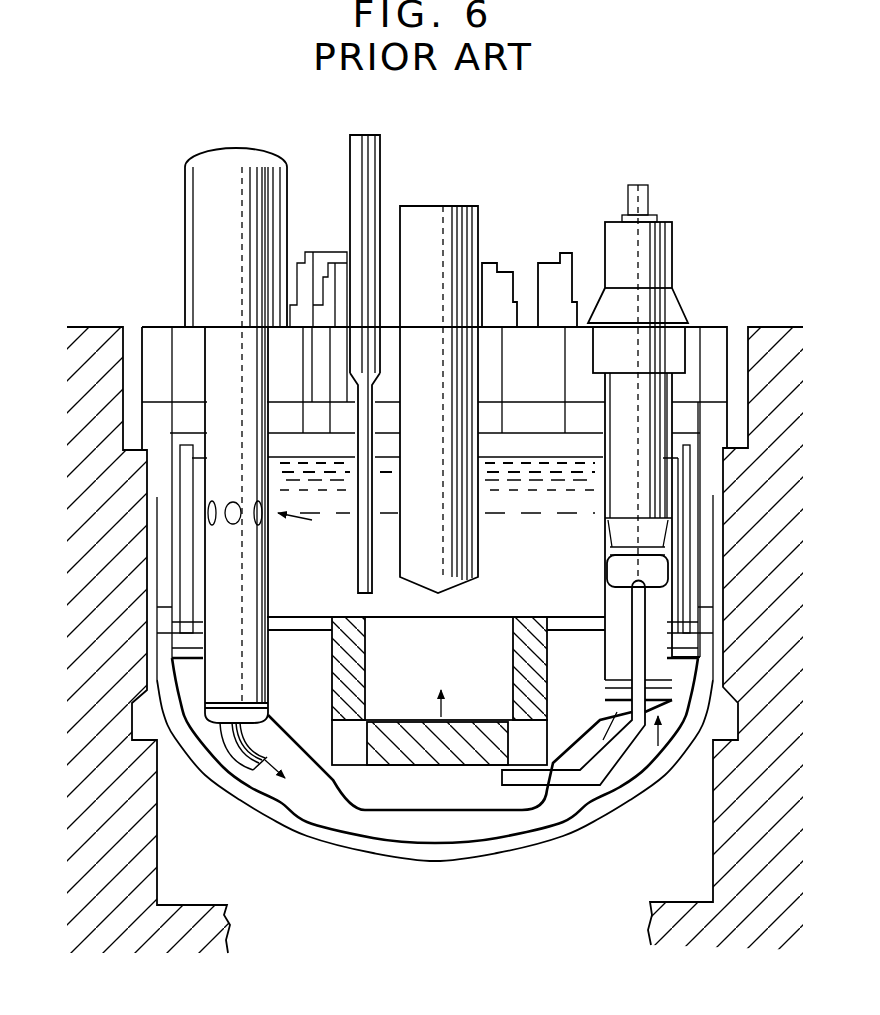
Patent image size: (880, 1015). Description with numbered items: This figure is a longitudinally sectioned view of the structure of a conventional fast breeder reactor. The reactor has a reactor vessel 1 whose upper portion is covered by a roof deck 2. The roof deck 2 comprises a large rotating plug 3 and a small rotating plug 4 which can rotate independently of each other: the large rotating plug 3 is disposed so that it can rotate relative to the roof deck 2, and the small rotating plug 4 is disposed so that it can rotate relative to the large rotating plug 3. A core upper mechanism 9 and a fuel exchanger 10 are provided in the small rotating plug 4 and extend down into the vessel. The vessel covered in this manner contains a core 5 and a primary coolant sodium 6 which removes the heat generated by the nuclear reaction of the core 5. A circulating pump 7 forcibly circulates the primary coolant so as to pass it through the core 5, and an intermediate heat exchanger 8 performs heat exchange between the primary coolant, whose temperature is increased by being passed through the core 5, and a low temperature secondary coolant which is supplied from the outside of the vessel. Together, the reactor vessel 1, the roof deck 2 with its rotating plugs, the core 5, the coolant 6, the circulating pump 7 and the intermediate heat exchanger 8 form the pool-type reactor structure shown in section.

The reactor vessel 1 is at (303, 823).
The roof deck 2 is at (157, 333).
The large rotating plug 3 is at (538, 333).
The small rotating plug 4 is at (487, 333).
The core 5 is at (400, 712).
The primary coolant sodium 6 is at (326, 575).
The circulating pump 7 is at (668, 255).
The intermediate heat exchanger 8 is at (189, 263).
The core upper mechanism 9 is at (445, 207).
The fuel exchanger 10 is at (381, 157).